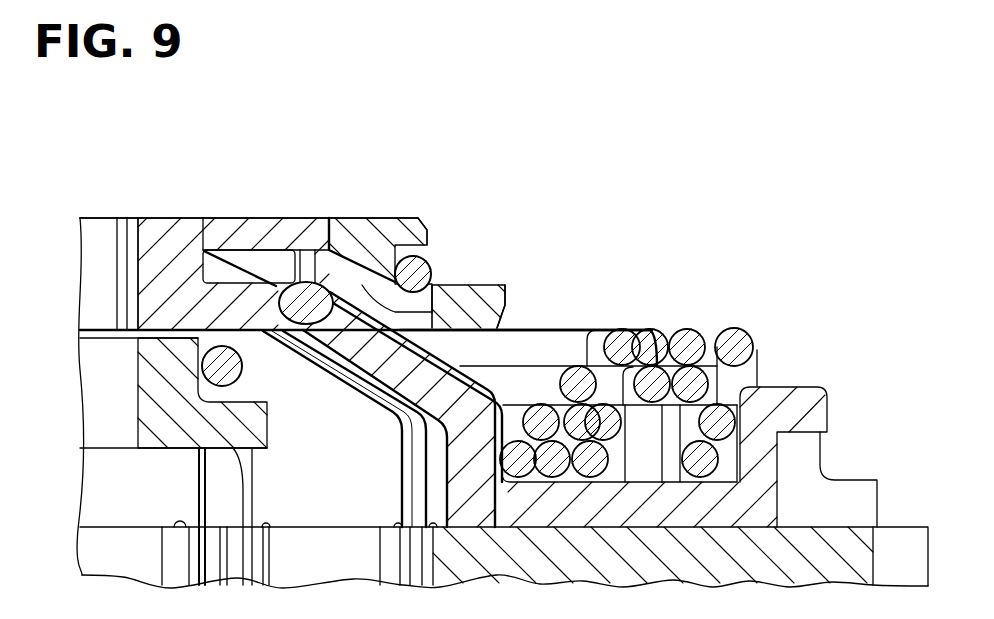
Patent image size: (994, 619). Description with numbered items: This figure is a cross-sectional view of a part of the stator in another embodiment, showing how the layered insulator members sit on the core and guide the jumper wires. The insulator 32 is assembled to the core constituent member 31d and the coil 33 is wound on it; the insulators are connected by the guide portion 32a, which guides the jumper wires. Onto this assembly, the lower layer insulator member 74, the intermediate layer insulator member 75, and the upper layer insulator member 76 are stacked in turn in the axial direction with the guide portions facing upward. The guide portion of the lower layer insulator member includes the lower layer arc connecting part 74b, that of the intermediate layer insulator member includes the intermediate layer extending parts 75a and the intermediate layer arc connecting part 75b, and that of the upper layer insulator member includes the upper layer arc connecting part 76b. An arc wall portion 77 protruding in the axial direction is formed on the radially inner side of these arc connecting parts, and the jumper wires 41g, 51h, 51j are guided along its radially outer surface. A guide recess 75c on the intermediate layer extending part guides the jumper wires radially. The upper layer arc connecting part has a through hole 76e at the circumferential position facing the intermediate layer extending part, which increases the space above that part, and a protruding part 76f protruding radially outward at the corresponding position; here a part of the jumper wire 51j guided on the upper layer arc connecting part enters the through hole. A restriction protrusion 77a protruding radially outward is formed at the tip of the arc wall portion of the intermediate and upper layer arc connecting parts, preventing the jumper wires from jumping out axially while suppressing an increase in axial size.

The core constituent member 31d is at (800, 542).
The insulator 32 is at (767, 393).
The guide portion 32a is at (117, 242).
The coil 33 is at (685, 327).
The jumper wire 41g is at (232, 368).
The jumper wire 51h is at (307, 277).
The jumper wire 51j is at (423, 275).
The lower layer insulator member 74 is at (267, 433).
The lower layer arc connecting part 74b is at (143, 400).
The intermediate layer insulator member 75 is at (157, 219).
The intermediate layer extending part 75a is at (430, 315).
The intermediate layer arc connecting part 75b is at (150, 273).
The guide recess 75c is at (300, 333).
The upper layer insulator member 76 is at (500, 285).
The upper layer arc connecting part 76b is at (348, 222).
The through hole 76e is at (430, 300).
The protruding part 76f is at (505, 300).
The arc wall portion 77 is at (180, 218).
The restriction protrusion 77a is at (427, 230).